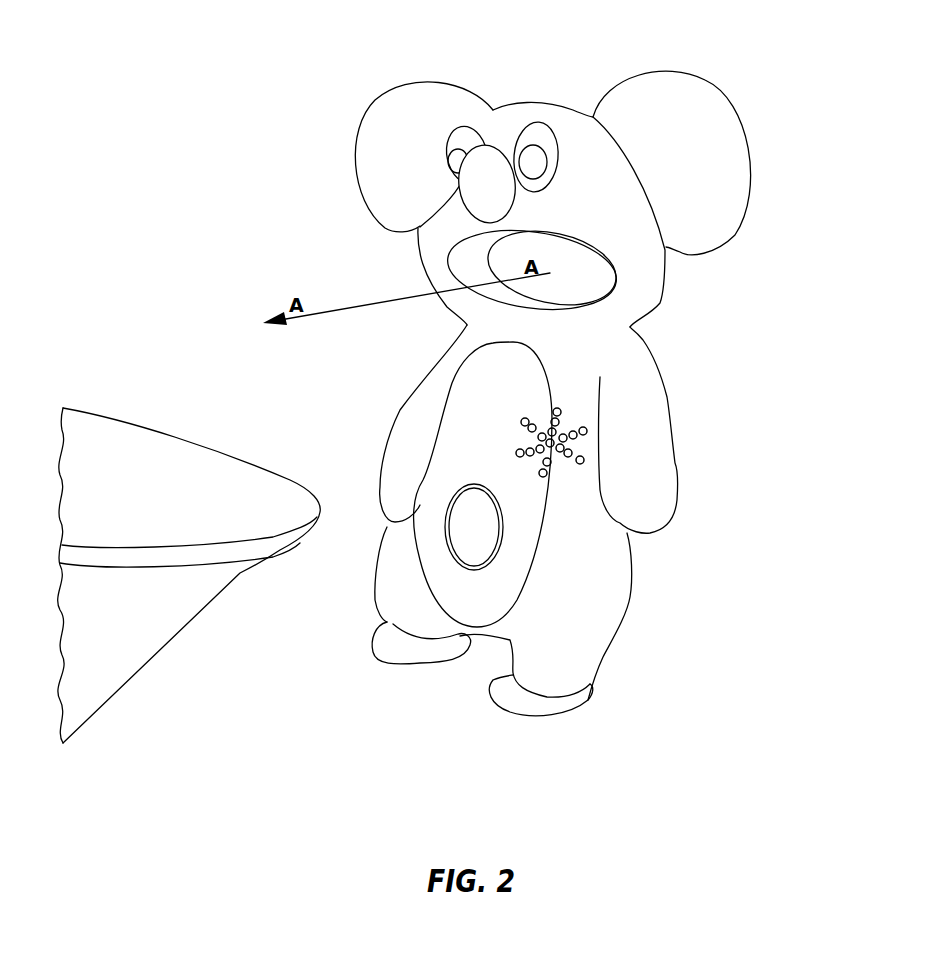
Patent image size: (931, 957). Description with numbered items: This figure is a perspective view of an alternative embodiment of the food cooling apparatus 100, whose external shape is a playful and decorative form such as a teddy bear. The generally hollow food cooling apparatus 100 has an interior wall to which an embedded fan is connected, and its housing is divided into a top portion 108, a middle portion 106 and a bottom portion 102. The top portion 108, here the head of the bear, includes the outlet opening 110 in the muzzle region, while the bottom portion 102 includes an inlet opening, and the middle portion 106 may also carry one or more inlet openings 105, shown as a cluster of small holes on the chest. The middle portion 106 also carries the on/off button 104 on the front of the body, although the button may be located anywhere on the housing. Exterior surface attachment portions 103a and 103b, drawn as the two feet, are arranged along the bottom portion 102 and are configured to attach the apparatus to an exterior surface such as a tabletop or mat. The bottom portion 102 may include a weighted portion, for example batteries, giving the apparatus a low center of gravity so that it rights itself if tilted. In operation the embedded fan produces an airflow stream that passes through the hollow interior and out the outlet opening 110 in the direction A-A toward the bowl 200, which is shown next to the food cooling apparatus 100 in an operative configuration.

The food cooling apparatus 100 is at (278, 116).
The bottom portion 102 is at (630, 597).
The exterior surface attachment portion 103a is at (420, 667).
The exterior surface attachment portion 103b is at (590, 713).
The on/off button 104 is at (480, 530).
The inlet opening 105 is at (580, 452).
The middle portion 106 is at (668, 401).
The top portion 108 is at (518, 100).
The outlet opening 110 is at (590, 295).
The bowl 200 is at (97, 412).